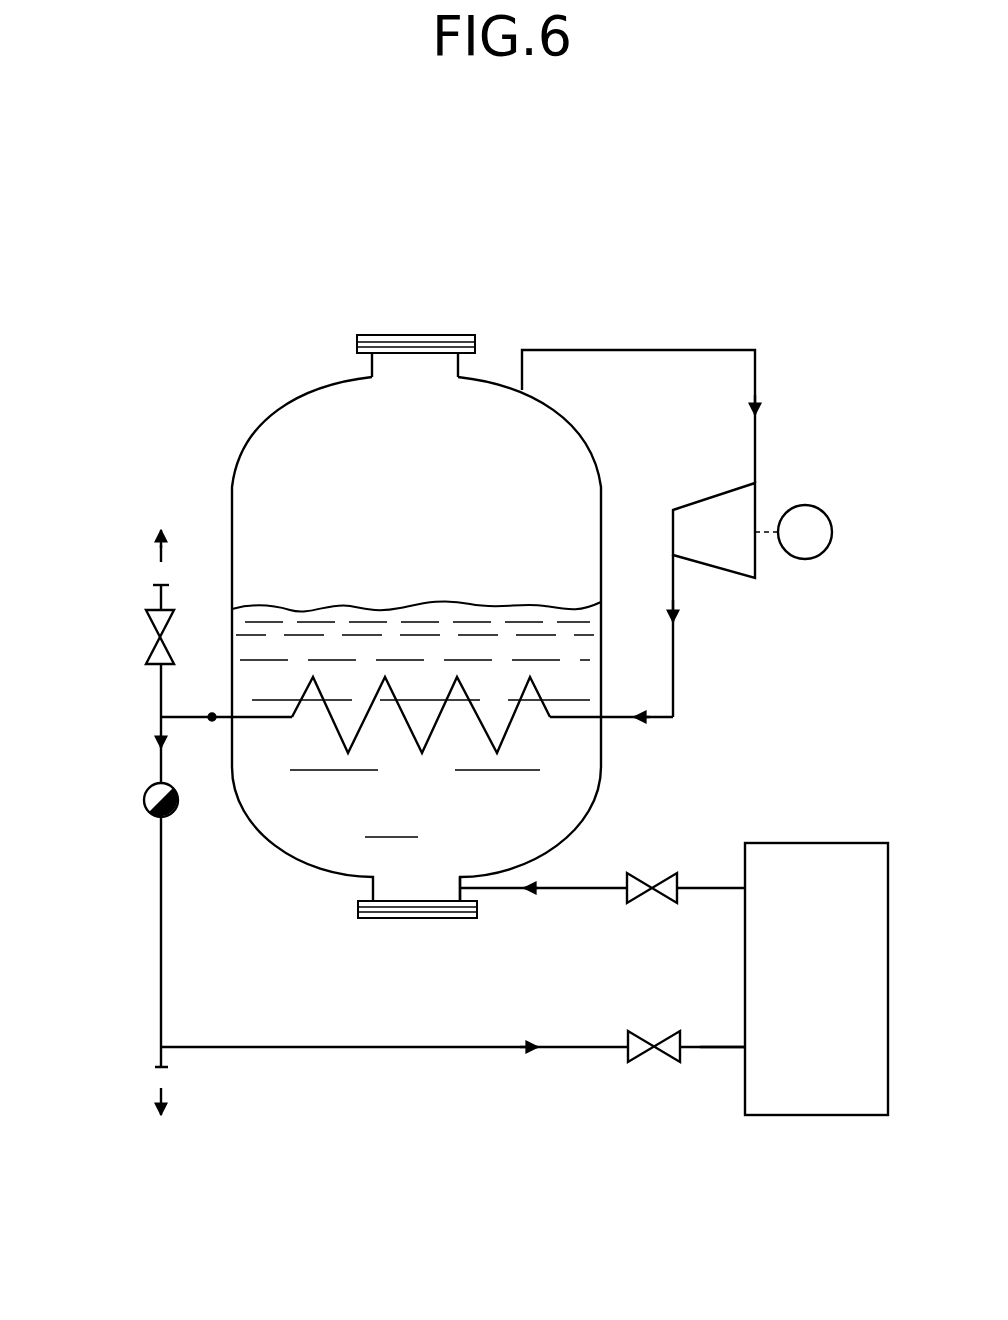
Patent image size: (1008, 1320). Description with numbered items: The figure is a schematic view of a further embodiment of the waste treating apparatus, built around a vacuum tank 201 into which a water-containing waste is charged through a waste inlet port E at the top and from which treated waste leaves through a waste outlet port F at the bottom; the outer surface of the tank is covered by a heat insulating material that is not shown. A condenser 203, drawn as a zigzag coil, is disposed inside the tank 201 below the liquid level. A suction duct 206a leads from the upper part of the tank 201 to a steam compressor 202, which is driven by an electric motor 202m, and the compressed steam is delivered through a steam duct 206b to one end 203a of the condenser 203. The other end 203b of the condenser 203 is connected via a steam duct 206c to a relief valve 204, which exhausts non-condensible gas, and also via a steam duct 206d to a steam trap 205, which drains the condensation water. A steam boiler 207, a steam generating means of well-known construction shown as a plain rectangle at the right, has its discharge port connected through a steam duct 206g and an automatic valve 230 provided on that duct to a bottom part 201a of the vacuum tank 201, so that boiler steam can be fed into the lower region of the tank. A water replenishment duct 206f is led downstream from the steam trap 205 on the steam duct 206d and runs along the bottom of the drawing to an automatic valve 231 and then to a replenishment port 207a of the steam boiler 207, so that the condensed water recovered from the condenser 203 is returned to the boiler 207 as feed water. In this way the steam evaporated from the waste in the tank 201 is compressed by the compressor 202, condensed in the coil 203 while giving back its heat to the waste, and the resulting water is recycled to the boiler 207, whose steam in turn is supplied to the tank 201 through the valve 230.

The vacuum tank 201 is at (258, 423).
The bottom part of the vacuum tank 201a is at (470, 890).
The steam compressor 202 is at (757, 566).
The electric motor 202m is at (805, 505).
The condenser 203 is at (510, 727).
The one end of the condenser 203a is at (613, 720).
The other end of the condenser 203b is at (210, 720).
The relief valve 204 is at (145, 648).
The steam trap 205 is at (152, 788).
The suction duct 206a is at (612, 348).
The steam duct 206b is at (673, 670).
The steam duct 206c is at (172, 690).
The steam duct 206d is at (161, 768).
The water replenishment duct 206f is at (320, 1047).
The steam duct 206g is at (575, 885).
The steam boiler 207 is at (815, 1115).
The replenishment port 207a is at (745, 1050).
The automatic valve 230 is at (658, 862).
The automatic valve 231 is at (656, 1022).
The waste inlet port E is at (410, 335).
The waste outlet port F is at (395, 920).